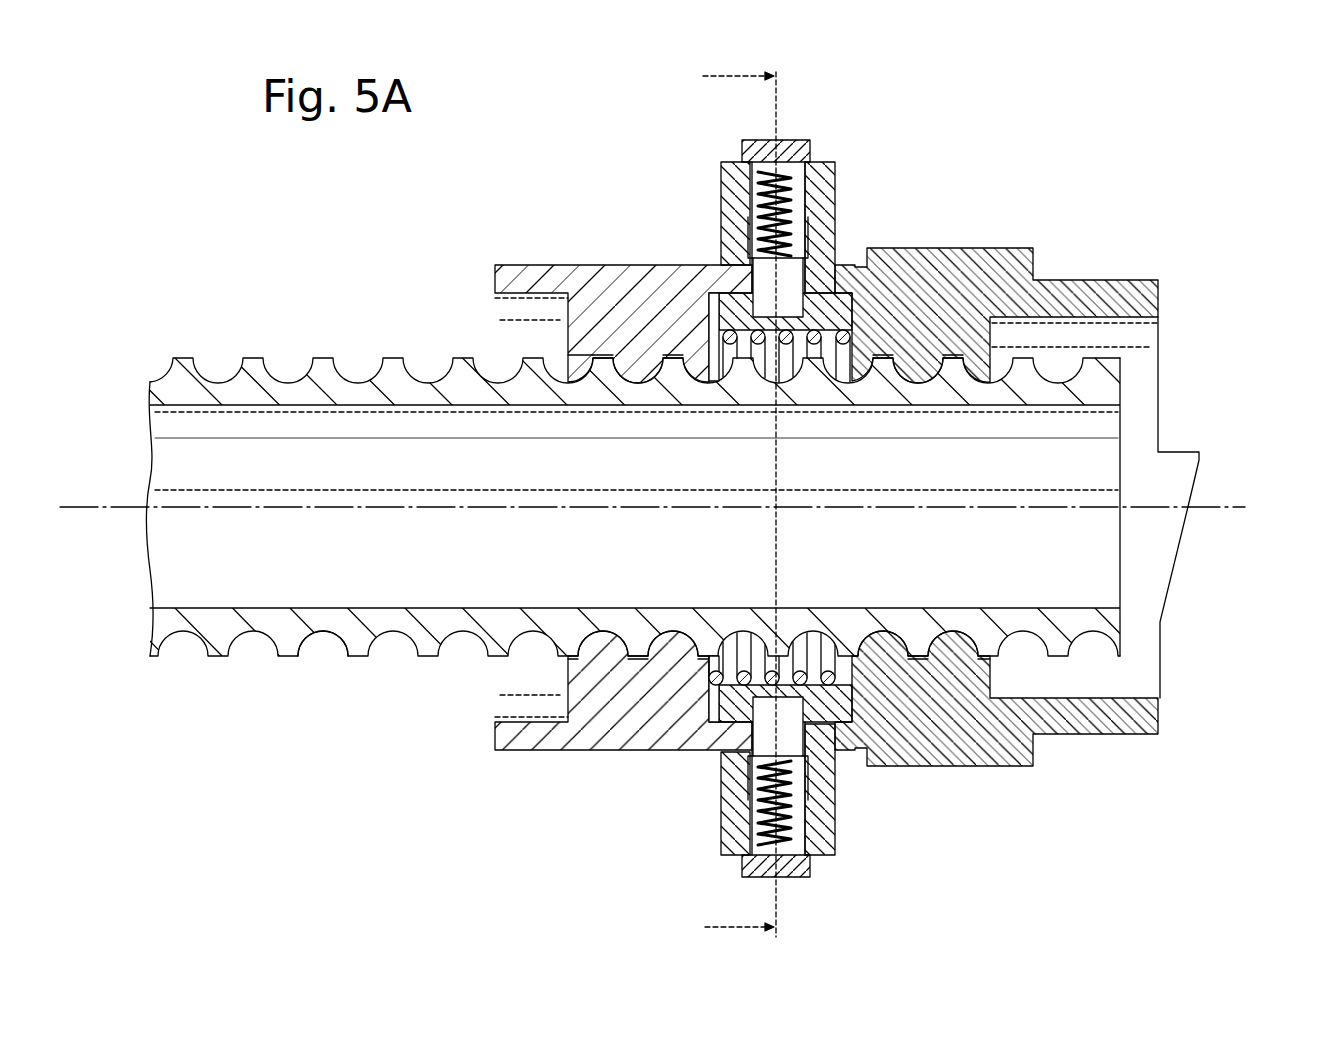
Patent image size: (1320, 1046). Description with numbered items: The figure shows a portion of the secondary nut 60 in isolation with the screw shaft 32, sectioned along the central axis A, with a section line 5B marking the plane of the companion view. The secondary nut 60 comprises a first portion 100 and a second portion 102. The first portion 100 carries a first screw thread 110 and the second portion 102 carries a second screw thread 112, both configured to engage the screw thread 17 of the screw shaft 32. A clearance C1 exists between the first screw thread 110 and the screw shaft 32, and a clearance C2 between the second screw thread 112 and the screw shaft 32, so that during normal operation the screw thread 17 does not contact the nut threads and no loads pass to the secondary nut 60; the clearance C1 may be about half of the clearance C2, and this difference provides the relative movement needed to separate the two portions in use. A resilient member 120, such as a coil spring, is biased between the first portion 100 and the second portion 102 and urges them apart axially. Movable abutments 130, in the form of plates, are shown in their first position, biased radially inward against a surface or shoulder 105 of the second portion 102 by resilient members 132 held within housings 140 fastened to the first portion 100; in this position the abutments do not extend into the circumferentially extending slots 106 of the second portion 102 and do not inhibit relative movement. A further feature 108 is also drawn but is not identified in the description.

The secondary nut 60 is at (1000, 158).
The screw shaft 32 is at (282, 632).
The screw thread 17 is at (340, 640).
The first portion 100 is at (527, 265).
The second portion 102 is at (1010, 247).
The surface or shoulder 105 is at (806, 292).
The circumferentially extending slots 106 is at (768, 305).
The spring bore 108 is at (747, 277).
The first screw thread 110 is at (643, 370).
The second screw thread 112 is at (920, 360).
The resilient member 120 is at (832, 664).
The movable abutment 130 is at (785, 274).
The resilient member 132 is at (793, 140).
The housing 140 is at (733, 162).
The clearance C1 is at (545, 690).
The clearance C2 is at (988, 682).
The axis A is at (663, 490).
The section line 5B is at (737, 502).